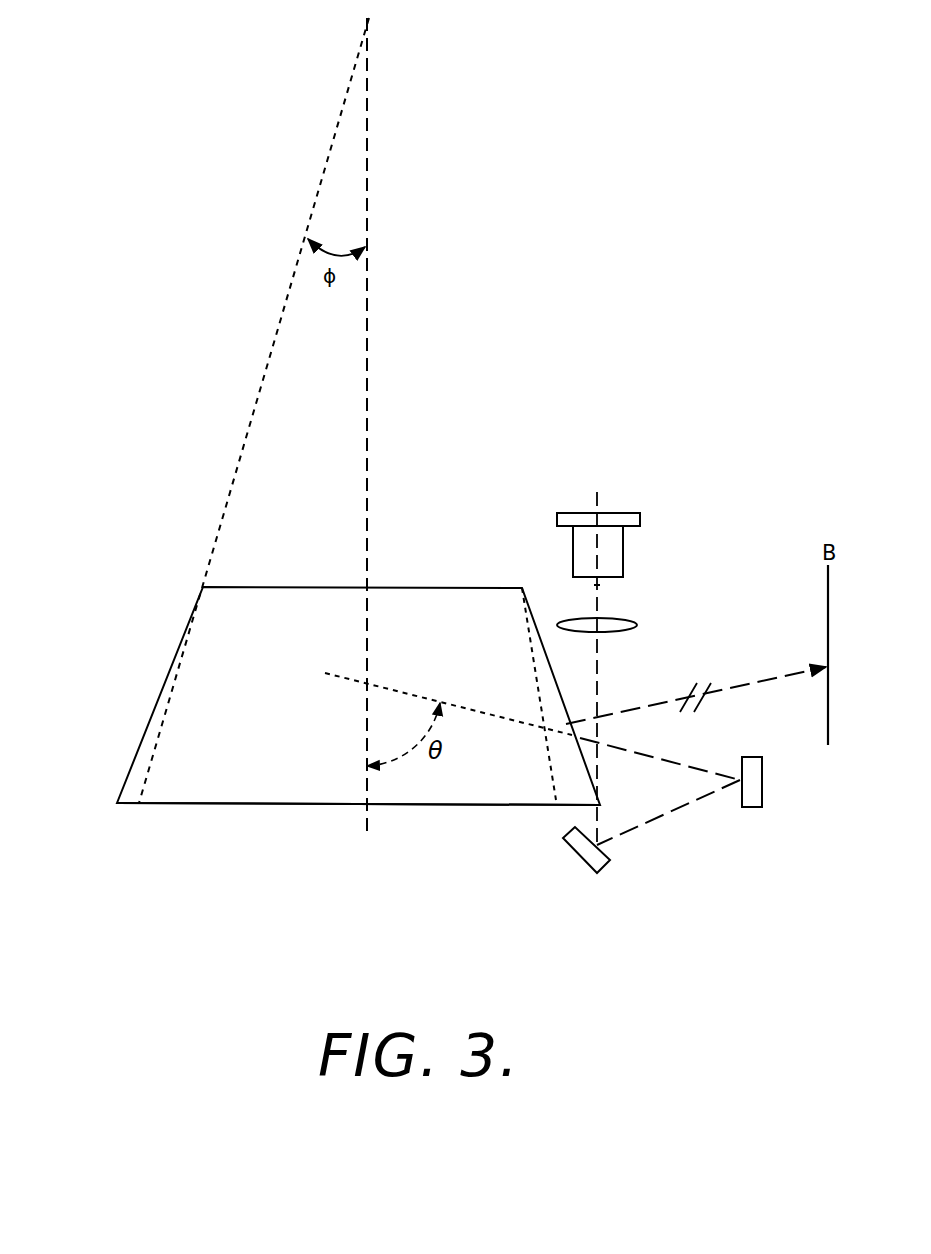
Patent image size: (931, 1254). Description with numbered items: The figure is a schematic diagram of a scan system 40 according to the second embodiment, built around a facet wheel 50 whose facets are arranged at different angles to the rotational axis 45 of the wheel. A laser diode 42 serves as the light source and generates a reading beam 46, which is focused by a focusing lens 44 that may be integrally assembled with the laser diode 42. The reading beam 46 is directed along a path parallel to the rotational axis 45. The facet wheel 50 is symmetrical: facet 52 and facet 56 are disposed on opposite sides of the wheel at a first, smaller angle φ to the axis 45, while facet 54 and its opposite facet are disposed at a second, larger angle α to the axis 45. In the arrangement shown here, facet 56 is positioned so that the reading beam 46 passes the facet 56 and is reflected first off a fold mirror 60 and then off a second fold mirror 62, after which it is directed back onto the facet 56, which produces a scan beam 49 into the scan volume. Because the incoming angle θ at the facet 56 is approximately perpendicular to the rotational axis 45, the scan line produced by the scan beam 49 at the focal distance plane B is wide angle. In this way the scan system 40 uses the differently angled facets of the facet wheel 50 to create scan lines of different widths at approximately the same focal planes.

The scan system 40 is at (701, 409).
The laser diode 42 is at (641, 521).
The focusing lens 44 is at (637, 625).
The rotational axis 45 is at (368, 524).
The reading beam 46 is at (598, 586).
The scan beam 49 is at (664, 700).
The facet wheel 50 is at (230, 808).
The facet 52 is at (150, 766).
The facet 54 is at (299, 795).
The facet 56 is at (556, 791).
The fold mirror 60 is at (603, 866).
The fold mirror 62 is at (762, 807).